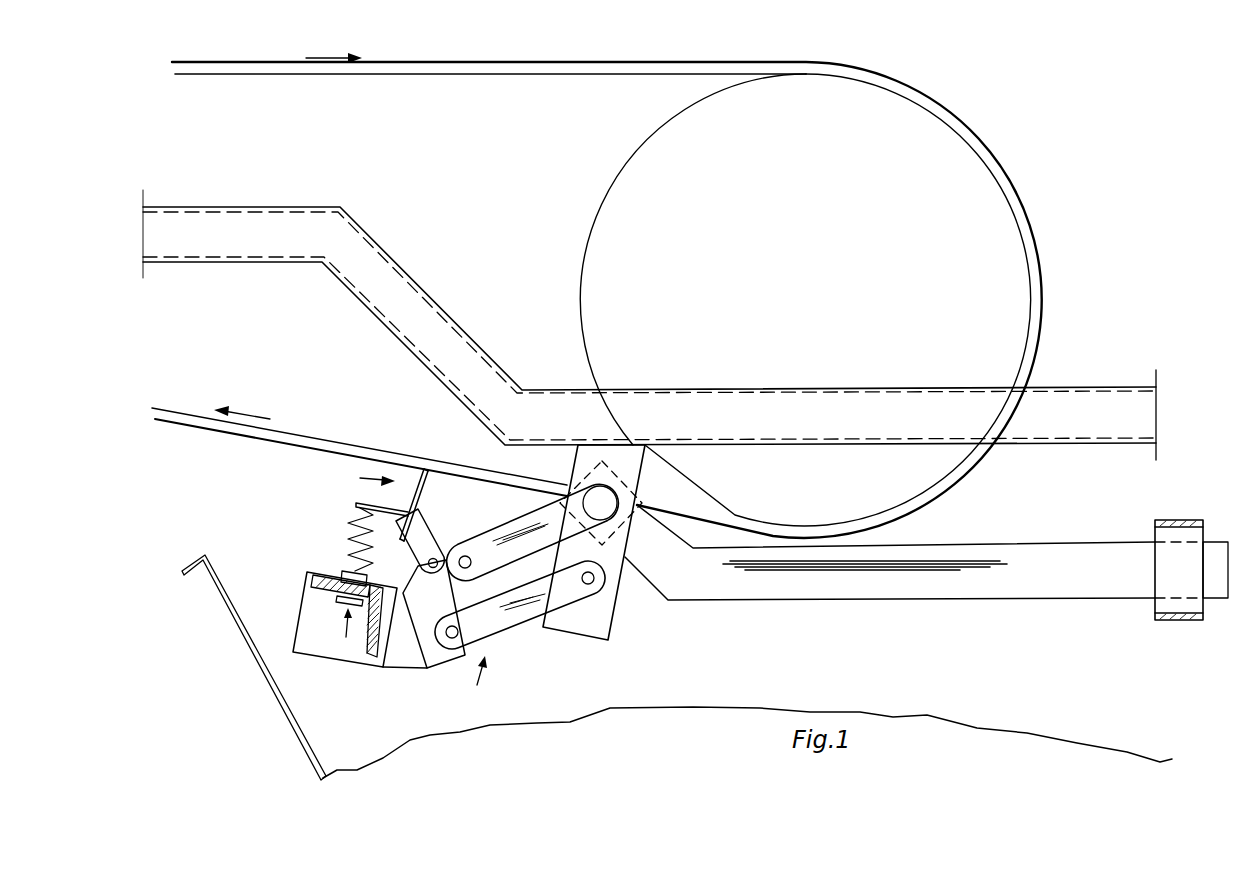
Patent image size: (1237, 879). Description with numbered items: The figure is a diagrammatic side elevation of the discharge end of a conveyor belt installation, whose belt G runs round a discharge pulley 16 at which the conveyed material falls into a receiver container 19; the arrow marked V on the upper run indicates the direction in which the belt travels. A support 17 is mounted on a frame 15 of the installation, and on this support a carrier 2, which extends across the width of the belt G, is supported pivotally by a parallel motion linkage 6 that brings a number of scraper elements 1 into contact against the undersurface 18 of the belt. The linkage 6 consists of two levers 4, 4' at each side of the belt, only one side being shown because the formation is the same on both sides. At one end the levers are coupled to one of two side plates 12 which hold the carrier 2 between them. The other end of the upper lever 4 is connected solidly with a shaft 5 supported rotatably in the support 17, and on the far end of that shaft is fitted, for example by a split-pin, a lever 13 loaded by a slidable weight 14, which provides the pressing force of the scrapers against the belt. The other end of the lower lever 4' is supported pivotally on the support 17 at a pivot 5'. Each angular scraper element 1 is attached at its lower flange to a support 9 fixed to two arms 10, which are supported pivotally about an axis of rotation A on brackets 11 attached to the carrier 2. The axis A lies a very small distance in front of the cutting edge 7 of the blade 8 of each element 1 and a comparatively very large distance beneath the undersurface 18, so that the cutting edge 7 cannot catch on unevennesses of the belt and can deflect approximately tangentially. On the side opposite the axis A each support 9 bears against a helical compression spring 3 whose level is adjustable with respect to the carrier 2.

The scraper element 1 is at (369, 475).
The carrier 2 is at (352, 655).
The helical compression spring 3 is at (353, 556).
The upper lever 4 is at (533, 532).
The lower lever 4' is at (520, 612).
The shaft 5 is at (630, 503).
The pivot 5' is at (586, 618).
The parallel motion linkage 6 is at (478, 677).
The cutting edge 7 is at (430, 471).
The blade 8 is at (418, 495).
The support 9 is at (357, 507).
The arm 10 is at (412, 548).
The bracket 11 is at (390, 652).
The side plate 12 is at (440, 655).
The lever 13 is at (945, 588).
The slidable weight 14 is at (1163, 621).
The frame 15 is at (300, 220).
The discharge pulley 16 is at (977, 183).
The support 17 is at (615, 622).
The undersurface of the belt 18 is at (178, 425).
The receiver container 19 is at (232, 612).
The axis of rotation A is at (437, 548).
The belt G is at (513, 75).
The web velocity V is at (334, 48).